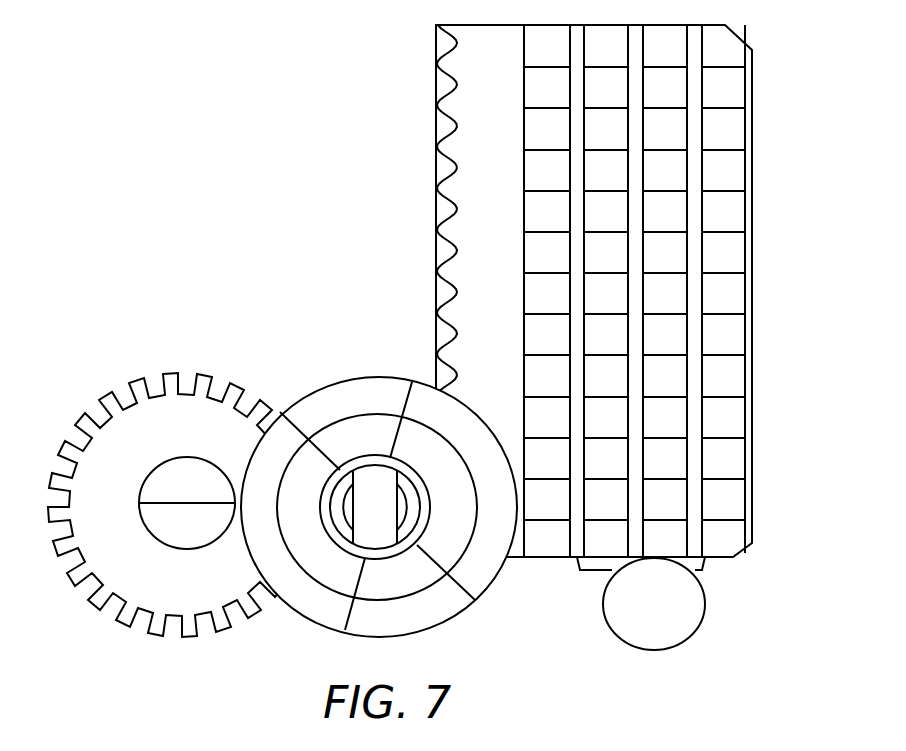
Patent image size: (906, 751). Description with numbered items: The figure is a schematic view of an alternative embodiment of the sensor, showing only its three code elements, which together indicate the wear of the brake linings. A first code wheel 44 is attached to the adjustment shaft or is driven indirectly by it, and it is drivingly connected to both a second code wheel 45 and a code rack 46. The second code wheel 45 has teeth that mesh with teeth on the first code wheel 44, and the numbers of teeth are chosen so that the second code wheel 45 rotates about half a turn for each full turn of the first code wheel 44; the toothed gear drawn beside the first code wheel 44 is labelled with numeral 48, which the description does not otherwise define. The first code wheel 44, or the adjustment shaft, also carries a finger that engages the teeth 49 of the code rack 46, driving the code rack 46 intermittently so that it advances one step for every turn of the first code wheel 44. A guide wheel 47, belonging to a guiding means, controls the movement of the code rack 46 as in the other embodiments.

The first code wheel 44 is at (433, 615).
The second code wheel 45 is at (127, 556).
The code rack 46 is at (727, 370).
The guide wheel 47 is at (662, 610).
The gear 48 is at (106, 400).
The teeth 49 is at (438, 287).